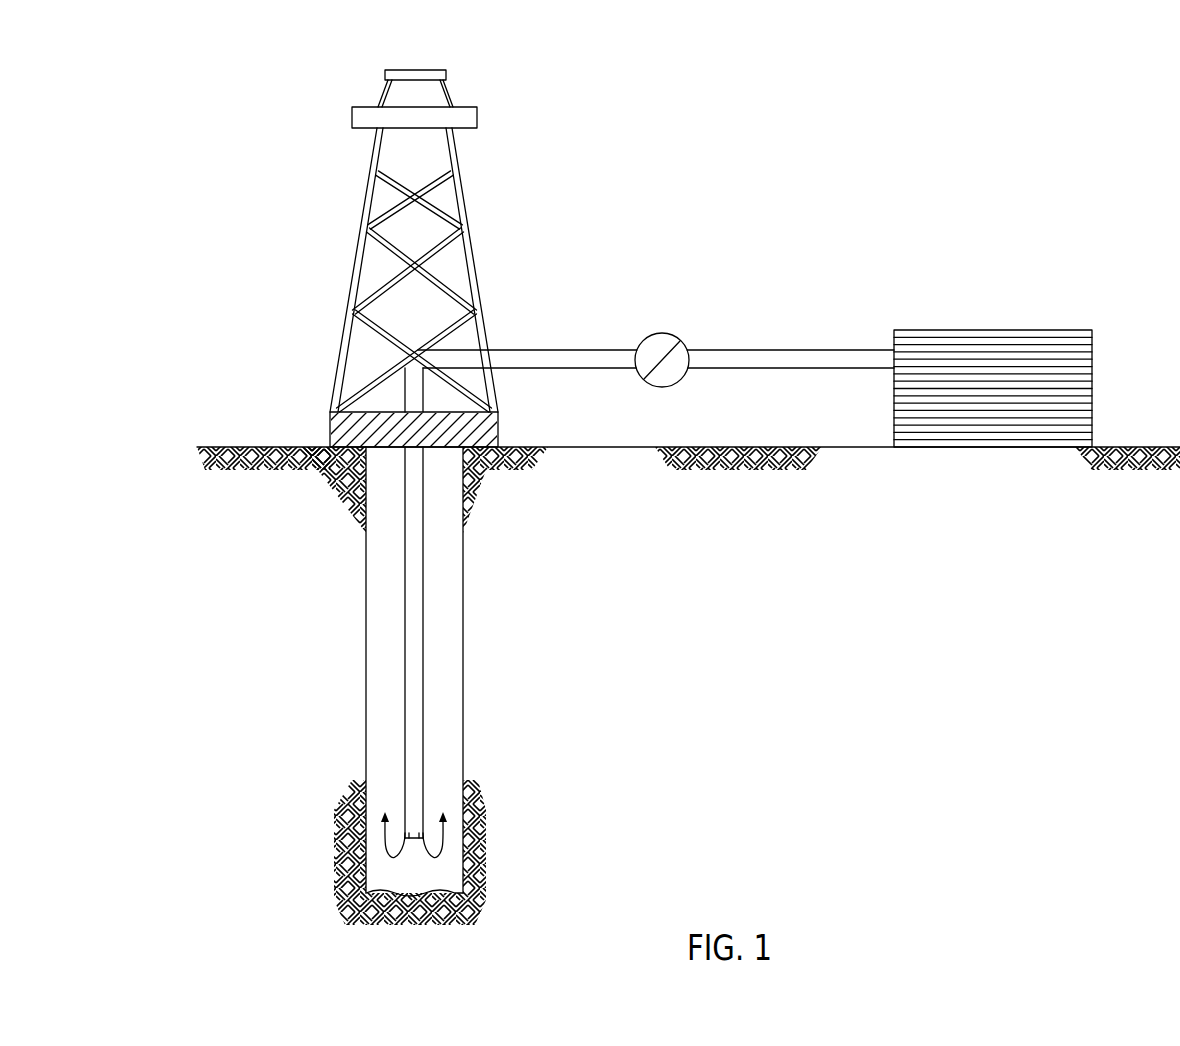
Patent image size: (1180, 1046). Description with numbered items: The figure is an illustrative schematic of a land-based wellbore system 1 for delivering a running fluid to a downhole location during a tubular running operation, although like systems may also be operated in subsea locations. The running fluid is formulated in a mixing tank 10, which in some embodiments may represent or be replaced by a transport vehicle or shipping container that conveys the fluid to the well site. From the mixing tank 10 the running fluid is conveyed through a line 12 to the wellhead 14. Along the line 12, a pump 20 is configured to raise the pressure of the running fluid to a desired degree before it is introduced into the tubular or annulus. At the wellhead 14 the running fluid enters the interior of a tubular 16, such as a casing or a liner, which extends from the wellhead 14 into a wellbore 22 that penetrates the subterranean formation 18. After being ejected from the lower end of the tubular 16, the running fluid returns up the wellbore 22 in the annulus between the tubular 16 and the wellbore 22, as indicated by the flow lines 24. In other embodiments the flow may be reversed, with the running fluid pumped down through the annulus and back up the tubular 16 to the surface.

The system 1 is at (190, 76).
The mixing tank 10 is at (1066, 331).
The line 12 is at (563, 350).
The wellhead 14 is at (330, 432).
The tubular 16 is at (423, 585).
The subterranean formation 18 is at (275, 678).
The pump 20 is at (678, 337).
The wellbore 22 is at (463, 694).
The flow lines 24 is at (366, 833).